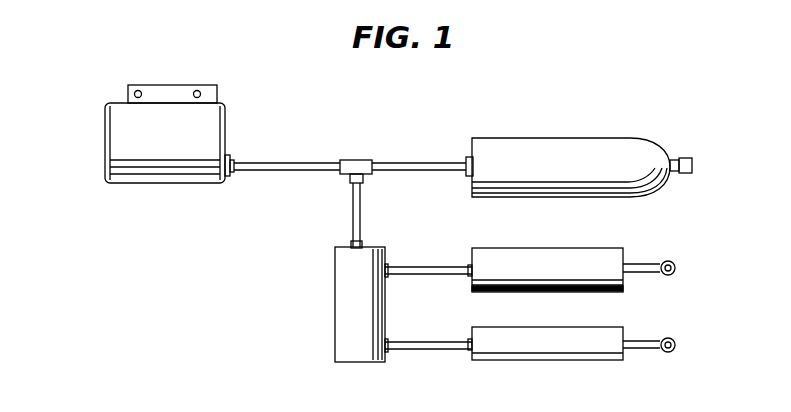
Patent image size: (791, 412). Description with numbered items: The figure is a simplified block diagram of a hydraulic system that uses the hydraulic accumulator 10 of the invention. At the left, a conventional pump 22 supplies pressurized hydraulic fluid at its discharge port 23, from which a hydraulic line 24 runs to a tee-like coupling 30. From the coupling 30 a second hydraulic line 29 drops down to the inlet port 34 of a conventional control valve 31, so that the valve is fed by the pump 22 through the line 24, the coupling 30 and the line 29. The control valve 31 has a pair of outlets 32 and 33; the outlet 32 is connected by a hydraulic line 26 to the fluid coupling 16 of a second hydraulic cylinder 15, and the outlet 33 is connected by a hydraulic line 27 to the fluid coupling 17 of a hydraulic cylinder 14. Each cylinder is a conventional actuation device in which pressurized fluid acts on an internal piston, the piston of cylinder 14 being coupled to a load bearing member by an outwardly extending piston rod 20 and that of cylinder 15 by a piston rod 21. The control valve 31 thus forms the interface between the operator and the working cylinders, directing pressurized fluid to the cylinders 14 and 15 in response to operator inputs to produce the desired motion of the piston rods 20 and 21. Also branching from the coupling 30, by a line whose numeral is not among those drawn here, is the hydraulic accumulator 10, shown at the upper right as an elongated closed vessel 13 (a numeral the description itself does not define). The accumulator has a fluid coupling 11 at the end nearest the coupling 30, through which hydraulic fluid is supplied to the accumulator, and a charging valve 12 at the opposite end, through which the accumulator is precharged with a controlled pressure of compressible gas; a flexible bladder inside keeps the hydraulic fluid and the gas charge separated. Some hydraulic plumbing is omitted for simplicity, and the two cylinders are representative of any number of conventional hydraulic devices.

The hydraulic accumulator 10 is at (583, 78).
The fluid coupling 11 is at (467, 160).
The charging valve 12 is at (678, 157).
The pressure tank 13 is at (590, 150).
The hydraulic cylinder 14 is at (513, 360).
The second hydraulic cylinder 15 is at (548, 262).
The fluid coupling 16 is at (472, 268).
The fluid coupling 17 is at (472, 342).
The piston rod 20 is at (643, 342).
The piston rod 21 is at (643, 265).
The pump 22 is at (115, 135).
The discharge port 23 is at (235, 157).
The hydraulic line 24 is at (291, 172).
The hydraulic line 26 is at (418, 265).
The hydraulic line 27 is at (412, 352).
The hydraulic line 29 is at (362, 208).
The coupling 30 is at (357, 162).
The control valve 31 is at (340, 300).
The outlet 32 is at (387, 278).
The outlet 33 is at (387, 340).
The inlet port 34 is at (352, 246).